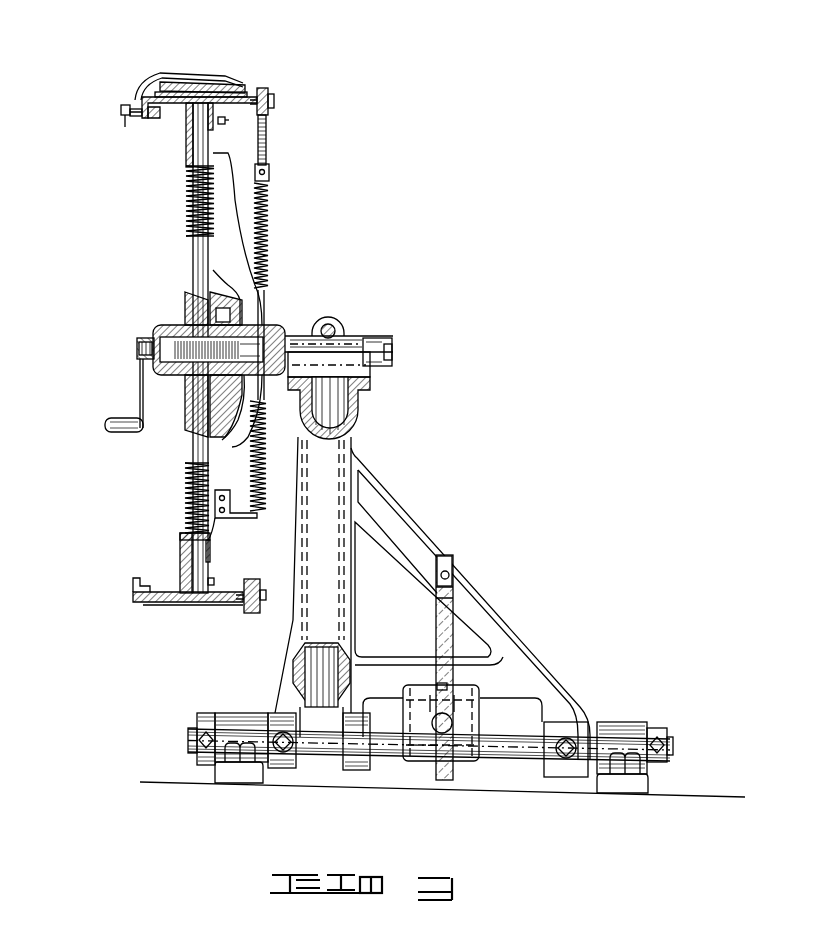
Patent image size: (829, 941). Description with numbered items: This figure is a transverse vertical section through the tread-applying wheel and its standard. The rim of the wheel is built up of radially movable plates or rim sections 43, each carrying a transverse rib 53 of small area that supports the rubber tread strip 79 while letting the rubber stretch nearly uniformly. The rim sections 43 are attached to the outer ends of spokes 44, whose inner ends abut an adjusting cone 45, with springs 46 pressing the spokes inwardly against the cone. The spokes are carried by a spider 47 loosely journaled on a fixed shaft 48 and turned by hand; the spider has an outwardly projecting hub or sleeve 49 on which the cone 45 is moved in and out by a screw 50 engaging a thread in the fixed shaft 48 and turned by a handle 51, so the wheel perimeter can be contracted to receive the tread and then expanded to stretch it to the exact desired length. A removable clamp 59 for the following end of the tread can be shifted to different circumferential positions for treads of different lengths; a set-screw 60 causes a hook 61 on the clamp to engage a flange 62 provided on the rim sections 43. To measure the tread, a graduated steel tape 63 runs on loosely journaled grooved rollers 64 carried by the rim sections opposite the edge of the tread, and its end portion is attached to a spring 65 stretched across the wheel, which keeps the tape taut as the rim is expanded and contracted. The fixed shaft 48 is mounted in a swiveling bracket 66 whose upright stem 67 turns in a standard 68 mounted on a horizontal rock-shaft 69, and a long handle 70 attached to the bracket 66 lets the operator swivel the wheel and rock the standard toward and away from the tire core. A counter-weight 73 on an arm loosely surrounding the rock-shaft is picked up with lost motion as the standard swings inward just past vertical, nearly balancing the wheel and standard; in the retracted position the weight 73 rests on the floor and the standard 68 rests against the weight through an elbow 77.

The rim sections 43 is at (190, 105).
The spokes 44 is at (198, 137).
The adjusting cone 45 is at (186, 305).
The springs 46 is at (190, 213).
The spider 47 is at (232, 270).
The fixed shaft 48 is at (278, 331).
The hub or sleeve 49 is at (196, 374).
The screw 50 is at (150, 360).
The handle 51 is at (137, 403).
The transverse rib 53 is at (250, 92).
The clamp 59 is at (170, 77).
The set-screw 60 is at (121, 114).
The hook 61 is at (130, 110).
The flange 62 is at (148, 103).
The steel tape 63 is at (267, 138).
The grooved rollers 64 is at (269, 100).
The spring 65 is at (266, 210).
The swiveling bracket 66 is at (368, 352).
The upright stem 67 is at (343, 413).
The standard 68 is at (390, 512).
The rock-shaft 69 is at (673, 748).
The long handle 70 is at (330, 328).
The counter-weight 73 is at (483, 685).
The elbow 77 is at (446, 633).
The rubber tread strip 79 is at (239, 82).